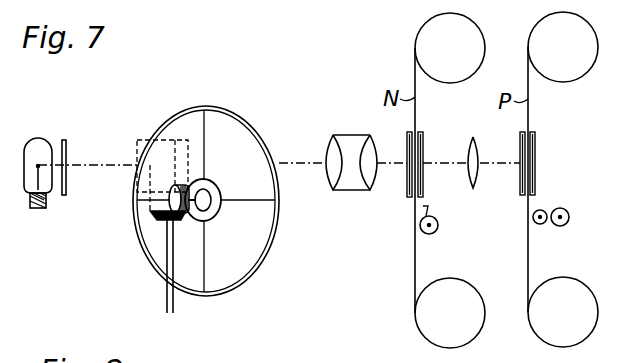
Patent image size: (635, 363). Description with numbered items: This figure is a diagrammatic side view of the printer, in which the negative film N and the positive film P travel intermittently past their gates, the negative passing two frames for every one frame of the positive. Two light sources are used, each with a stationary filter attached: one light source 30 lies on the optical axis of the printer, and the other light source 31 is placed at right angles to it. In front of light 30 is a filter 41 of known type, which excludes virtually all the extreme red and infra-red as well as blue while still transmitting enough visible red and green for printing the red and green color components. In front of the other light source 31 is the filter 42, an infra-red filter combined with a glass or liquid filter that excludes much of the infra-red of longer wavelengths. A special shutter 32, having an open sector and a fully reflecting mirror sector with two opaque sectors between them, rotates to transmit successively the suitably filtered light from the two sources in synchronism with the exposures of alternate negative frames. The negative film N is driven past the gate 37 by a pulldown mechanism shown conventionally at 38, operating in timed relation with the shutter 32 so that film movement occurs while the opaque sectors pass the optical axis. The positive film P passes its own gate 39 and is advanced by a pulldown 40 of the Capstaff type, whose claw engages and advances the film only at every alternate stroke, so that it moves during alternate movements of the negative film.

The light source 30 is at (40, 138).
The filter 41 is at (65, 195).
The filter 42 is at (137, 147).
The light source 31 is at (172, 140).
The shutter 32 is at (251, 131).
The gate 37 is at (421, 133).
The pulldown mechanism 38 is at (437, 228).
The slit plates 39 is at (535, 132).
The pulldown 40 is at (579, 208).